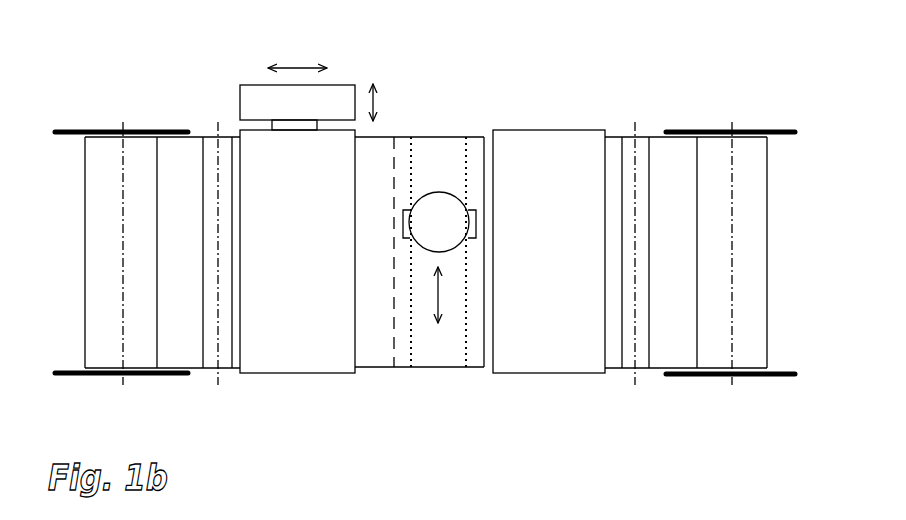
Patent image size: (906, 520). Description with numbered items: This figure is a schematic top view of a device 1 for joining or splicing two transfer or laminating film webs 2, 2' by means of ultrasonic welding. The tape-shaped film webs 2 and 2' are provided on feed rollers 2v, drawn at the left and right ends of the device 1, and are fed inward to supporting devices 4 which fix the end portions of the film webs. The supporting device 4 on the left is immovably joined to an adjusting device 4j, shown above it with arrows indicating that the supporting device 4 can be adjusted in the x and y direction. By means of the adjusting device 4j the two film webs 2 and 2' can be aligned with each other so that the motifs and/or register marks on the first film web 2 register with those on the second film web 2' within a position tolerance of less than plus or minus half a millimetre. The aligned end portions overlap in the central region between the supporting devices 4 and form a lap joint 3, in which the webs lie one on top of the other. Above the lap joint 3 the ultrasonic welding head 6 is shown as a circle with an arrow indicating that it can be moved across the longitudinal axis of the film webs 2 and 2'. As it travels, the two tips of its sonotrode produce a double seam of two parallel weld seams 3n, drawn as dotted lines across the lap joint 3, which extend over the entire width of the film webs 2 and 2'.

The device 1 is at (695, 68).
The first film web 2 is at (162, 275).
The second film web 2' is at (686, 275).
The feed roller 2v is at (134, 129).
The lap joint 3 is at (485, 372).
The weld seam 3n is at (467, 133).
The supporting device 4 is at (293, 377).
The adjusting device 4j is at (236, 104).
The ultrasonic welding head 6 is at (433, 188).